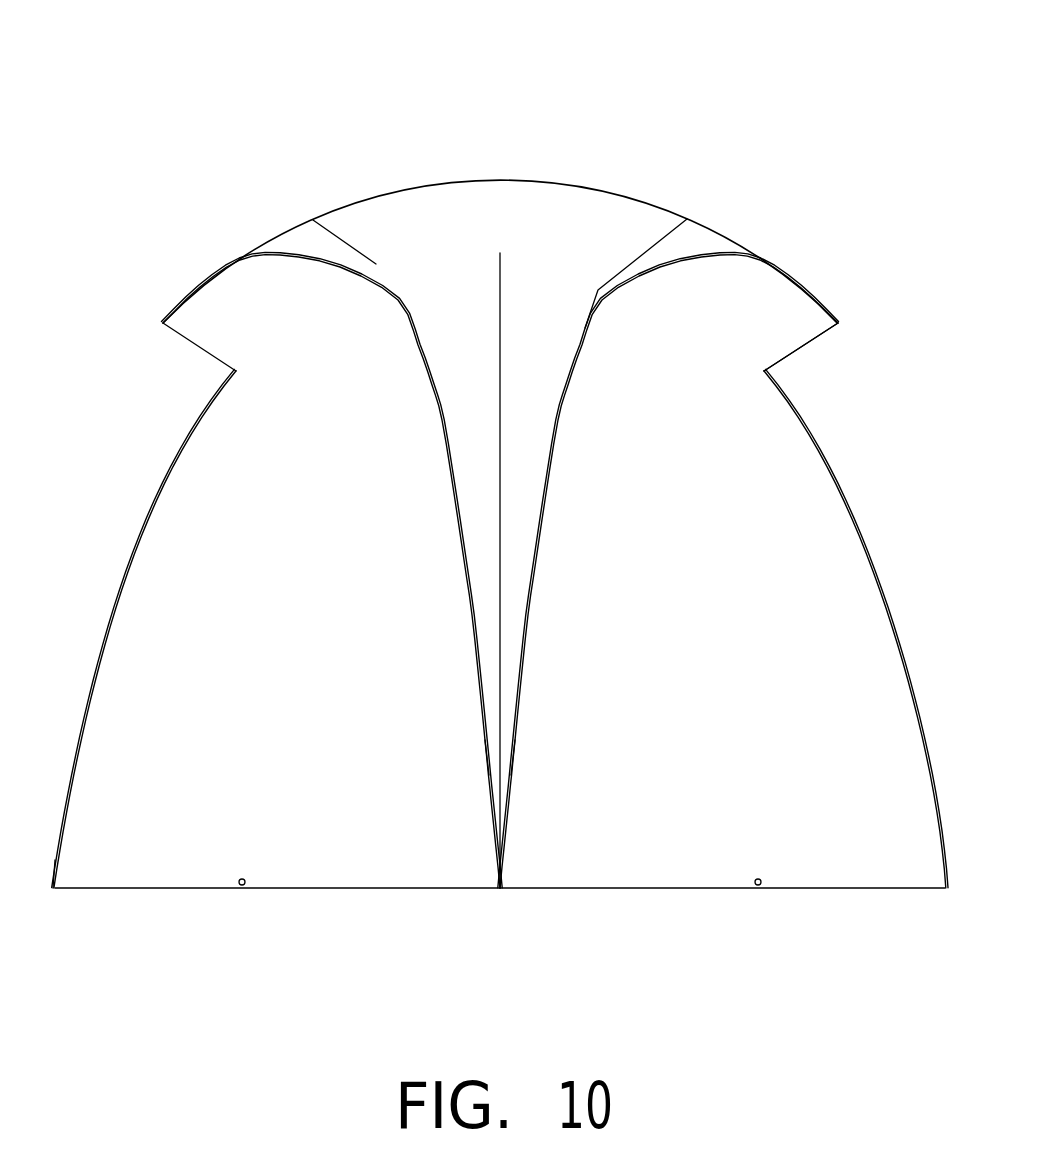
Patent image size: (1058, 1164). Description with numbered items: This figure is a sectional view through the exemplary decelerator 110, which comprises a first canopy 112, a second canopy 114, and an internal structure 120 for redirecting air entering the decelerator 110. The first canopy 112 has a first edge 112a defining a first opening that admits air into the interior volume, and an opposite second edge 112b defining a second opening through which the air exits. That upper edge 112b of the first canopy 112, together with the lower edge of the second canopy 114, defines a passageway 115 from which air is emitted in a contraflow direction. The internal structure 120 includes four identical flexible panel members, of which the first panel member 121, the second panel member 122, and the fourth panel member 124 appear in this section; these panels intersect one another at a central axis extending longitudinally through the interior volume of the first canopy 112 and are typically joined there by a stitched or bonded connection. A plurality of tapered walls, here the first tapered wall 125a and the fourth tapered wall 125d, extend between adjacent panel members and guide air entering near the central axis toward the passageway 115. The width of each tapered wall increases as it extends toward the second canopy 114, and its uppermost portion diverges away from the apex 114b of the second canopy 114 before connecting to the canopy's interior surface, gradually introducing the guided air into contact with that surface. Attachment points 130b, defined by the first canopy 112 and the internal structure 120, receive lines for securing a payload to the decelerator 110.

The decelerator 110 is at (103, 104).
The first canopy 112 is at (860, 530).
The first edge 112a is at (155, 890).
The second edge 112b is at (237, 372).
The second canopy 114 is at (245, 255).
The apex 114b is at (497, 180).
The passageway 115 is at (822, 366).
The internal structure 120 is at (60, 853).
The first panel member 121 is at (497, 267).
The second panel member 122 is at (618, 281).
The fourth panel member 124 is at (372, 268).
The first tapered wall 125a is at (513, 760).
The fourth tapered wall 125d is at (487, 760).
The attachment point 130b is at (242, 885).